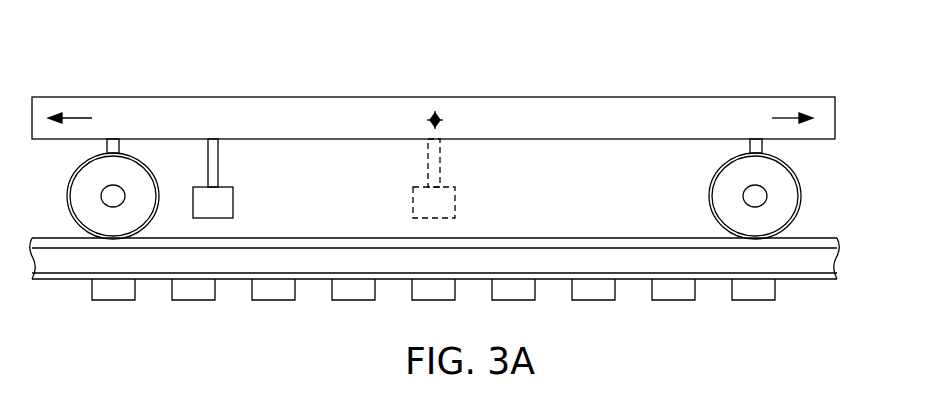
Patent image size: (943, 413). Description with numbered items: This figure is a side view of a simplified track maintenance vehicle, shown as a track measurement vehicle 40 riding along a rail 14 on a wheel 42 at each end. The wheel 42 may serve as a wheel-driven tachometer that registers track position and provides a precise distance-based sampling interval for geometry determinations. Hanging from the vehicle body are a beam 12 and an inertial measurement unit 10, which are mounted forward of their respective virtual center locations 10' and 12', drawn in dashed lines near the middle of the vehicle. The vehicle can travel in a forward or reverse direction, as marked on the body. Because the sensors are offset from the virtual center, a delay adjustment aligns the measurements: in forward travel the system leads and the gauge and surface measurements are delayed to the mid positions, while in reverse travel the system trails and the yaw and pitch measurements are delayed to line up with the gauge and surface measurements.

The track measurement vehicle 40 is at (738, 91).
The wheel 42 is at (802, 200).
The inertial measurement unit 10 is at (256, 187).
The beam 12 is at (245, 194).
The virtual center location 10' is at (477, 186).
The virtual center location 12' is at (466, 194).
The rail 14 is at (807, 265).